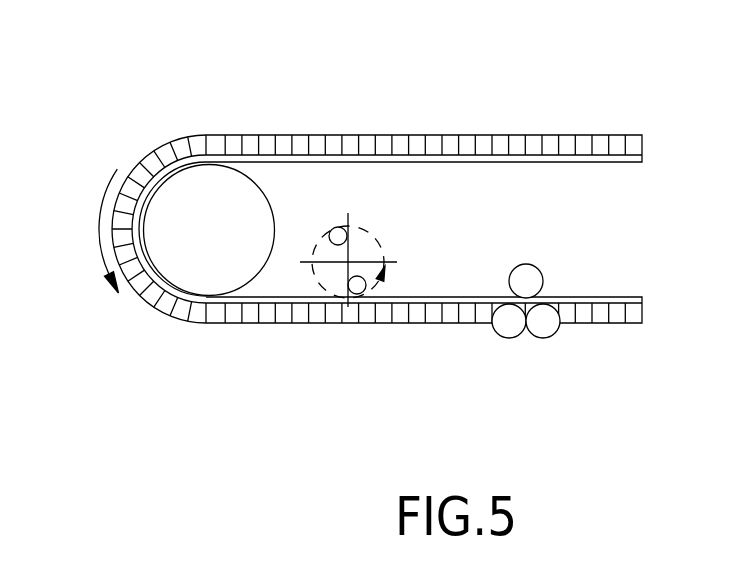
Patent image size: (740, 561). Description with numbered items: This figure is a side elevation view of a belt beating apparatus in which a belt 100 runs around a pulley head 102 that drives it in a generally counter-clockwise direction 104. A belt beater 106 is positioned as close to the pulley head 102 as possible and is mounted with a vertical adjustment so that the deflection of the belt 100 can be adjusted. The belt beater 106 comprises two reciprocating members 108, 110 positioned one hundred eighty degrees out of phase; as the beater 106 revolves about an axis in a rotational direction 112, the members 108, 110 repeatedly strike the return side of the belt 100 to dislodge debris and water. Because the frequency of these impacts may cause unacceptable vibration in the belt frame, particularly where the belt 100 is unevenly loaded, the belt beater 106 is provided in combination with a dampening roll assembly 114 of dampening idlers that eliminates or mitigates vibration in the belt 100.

The belt 100 is at (436, 137).
The pulley head 102 is at (179, 279).
The counter-clockwise direction 104 is at (104, 199).
The belt beater 106 is at (385, 238).
The reciprocating member 108 is at (336, 228).
The reciprocating member 110 is at (365, 292).
The rotational direction 112 is at (320, 240).
The dampening roll assembly 114 is at (560, 337).